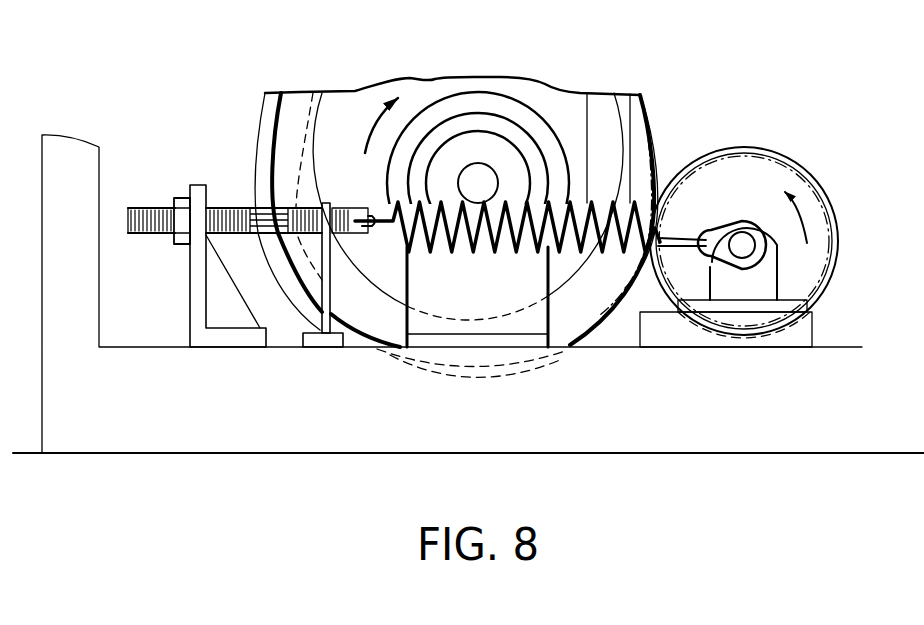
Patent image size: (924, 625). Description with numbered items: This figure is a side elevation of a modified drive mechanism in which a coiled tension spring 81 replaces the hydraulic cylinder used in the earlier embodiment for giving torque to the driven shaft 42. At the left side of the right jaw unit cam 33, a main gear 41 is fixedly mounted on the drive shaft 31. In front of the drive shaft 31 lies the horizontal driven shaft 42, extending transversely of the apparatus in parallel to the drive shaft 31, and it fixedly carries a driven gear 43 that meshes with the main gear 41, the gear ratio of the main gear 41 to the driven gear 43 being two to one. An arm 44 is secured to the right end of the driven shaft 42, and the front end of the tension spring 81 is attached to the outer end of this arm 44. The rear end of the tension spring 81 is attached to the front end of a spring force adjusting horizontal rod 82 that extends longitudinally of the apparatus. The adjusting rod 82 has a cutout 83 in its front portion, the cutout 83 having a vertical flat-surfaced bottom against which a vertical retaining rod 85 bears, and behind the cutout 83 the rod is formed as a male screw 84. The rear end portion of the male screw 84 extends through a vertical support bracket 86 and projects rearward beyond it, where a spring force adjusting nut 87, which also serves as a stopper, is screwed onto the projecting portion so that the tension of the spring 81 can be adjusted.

The drive shaft 31 is at (480, 172).
The right jaw unit cam 33 is at (254, 102).
The main gear 41 is at (660, 146).
The driven shaft 42 is at (752, 247).
The driven gear 43 is at (805, 173).
The arm 44 is at (721, 258).
The coiled tension spring 81 is at (603, 262).
The spring force adjusting horizontal rod 82 is at (257, 208).
The cutout 83 is at (335, 205).
The male screw 84 is at (160, 208).
The vertical retaining rod 85 is at (320, 318).
The vertical support bracket 86 is at (192, 312).
The spring force adjusting nut 87 is at (178, 244).